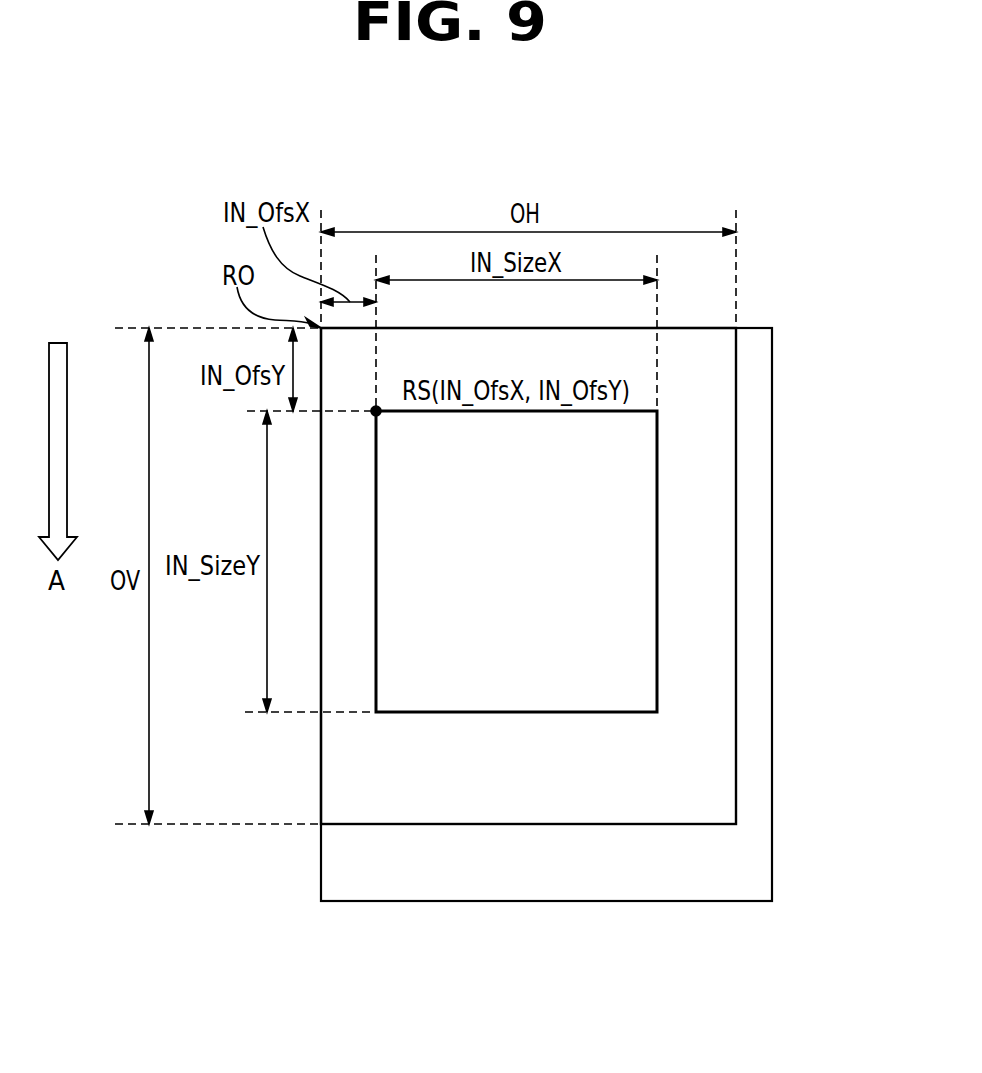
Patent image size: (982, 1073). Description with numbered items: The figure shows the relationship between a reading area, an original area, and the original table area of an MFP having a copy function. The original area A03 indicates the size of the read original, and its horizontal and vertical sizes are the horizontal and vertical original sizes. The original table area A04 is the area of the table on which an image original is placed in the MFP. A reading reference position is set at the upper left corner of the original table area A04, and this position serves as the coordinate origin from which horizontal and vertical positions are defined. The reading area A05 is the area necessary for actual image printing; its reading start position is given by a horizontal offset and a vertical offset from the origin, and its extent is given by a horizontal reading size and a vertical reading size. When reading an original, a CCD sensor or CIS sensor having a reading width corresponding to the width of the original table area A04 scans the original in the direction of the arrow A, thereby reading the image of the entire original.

The original area A03 is at (700, 340).
The original table area A04 is at (762, 477).
The reading area A05 is at (638, 648).